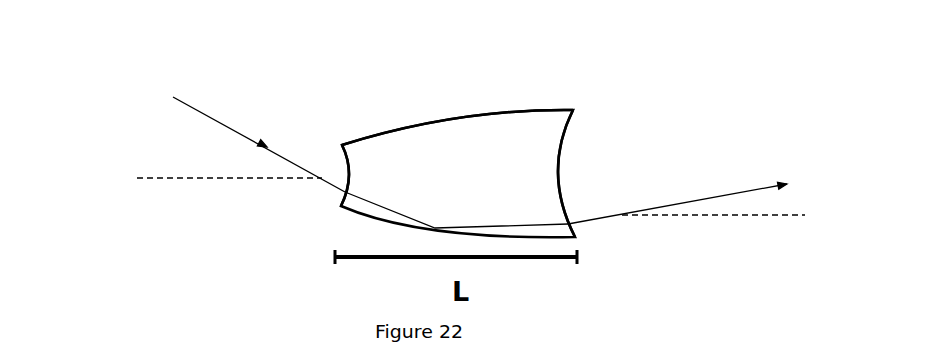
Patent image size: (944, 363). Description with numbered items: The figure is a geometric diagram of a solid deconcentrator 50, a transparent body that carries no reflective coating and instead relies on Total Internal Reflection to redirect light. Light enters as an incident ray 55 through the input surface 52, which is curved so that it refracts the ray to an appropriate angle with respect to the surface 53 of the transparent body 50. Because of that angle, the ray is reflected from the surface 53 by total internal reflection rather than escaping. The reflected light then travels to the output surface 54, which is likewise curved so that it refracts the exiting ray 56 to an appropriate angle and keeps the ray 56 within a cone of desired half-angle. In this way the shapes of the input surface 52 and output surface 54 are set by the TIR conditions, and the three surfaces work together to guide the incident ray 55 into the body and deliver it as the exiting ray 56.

The solid deconcentrator 50 is at (342, 60).
The input surface 52 is at (343, 160).
The surface 53 is at (458, 118).
The output surface 54 is at (567, 142).
The incident ray 55 is at (297, 149).
The exiting ray 56 is at (706, 190).